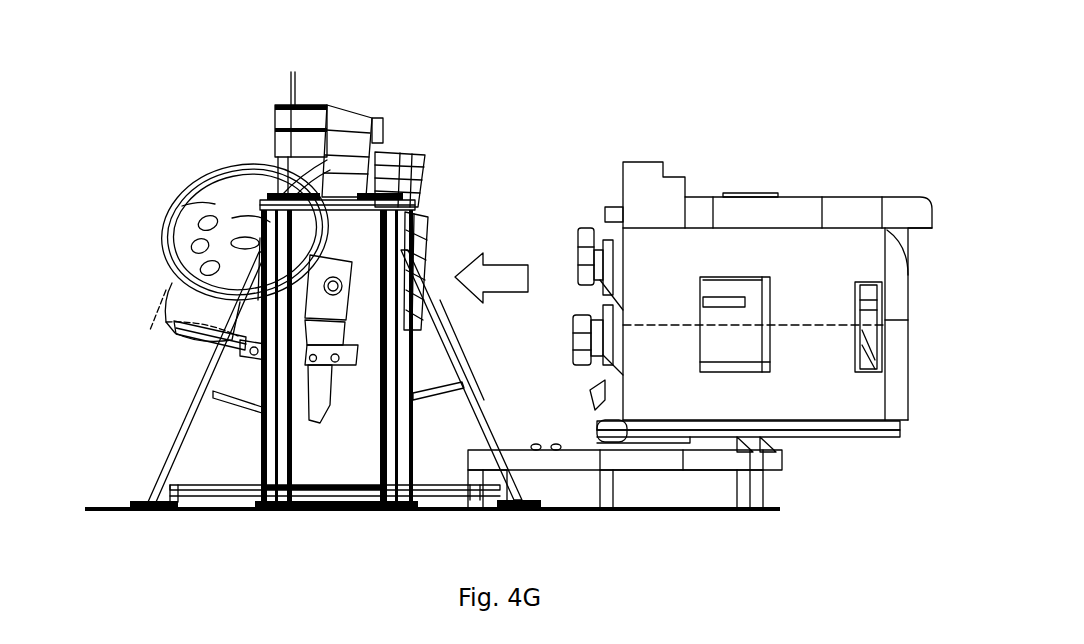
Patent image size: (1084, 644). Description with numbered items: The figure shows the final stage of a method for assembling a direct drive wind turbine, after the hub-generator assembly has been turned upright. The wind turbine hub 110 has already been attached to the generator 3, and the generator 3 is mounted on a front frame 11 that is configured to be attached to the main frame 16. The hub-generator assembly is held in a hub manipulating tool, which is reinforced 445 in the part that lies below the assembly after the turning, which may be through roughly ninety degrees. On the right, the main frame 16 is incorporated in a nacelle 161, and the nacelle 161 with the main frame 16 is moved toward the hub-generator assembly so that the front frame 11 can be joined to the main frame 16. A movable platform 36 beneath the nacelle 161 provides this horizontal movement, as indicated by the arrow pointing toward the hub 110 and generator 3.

The generator 3 is at (410, 132).
The front frame 11 is at (428, 228).
The main frame 16 is at (578, 257).
The movable platform 36 is at (662, 487).
The wind turbine hub 110 is at (187, 302).
The nacelle 161 is at (808, 150).
The reinforcement 445 is at (238, 357).